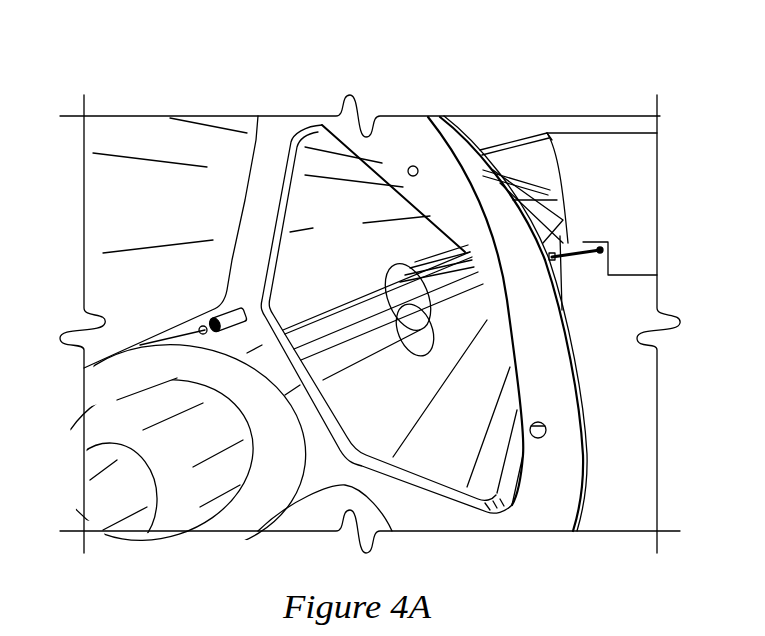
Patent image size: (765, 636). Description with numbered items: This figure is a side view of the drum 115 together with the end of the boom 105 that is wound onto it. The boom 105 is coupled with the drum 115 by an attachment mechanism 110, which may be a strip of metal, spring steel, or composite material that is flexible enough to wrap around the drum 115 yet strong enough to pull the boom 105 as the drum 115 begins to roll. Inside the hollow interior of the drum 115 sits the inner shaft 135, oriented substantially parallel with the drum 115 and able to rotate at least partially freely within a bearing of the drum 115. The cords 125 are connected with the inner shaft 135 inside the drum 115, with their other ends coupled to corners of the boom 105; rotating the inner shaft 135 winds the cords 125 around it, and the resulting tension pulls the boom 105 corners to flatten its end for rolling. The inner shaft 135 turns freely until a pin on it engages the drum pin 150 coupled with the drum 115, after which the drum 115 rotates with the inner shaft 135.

The boom 105 is at (648, 219).
The attachment mechanism 110 is at (480, 152).
The drum 115 is at (517, 180).
The cord 125 is at (577, 243).
The inner shaft 135 is at (363, 293).
The drum pin 150 is at (210, 322).